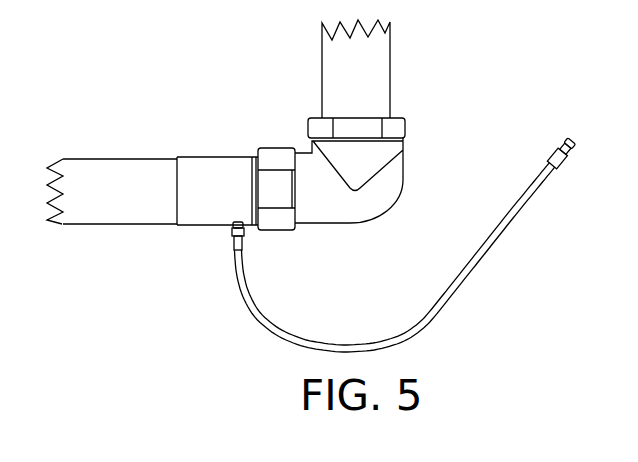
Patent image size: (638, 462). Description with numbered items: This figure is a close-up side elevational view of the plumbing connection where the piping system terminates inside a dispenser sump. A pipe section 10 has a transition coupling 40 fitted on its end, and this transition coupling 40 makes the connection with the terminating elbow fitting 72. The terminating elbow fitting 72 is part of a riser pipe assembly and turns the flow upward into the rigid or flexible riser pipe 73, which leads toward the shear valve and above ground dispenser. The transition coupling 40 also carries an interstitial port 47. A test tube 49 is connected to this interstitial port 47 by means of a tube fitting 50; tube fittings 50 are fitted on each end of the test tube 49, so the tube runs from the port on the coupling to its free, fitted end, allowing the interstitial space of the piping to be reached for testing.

The pipe section 10 is at (132, 190).
The transition coupling 40 is at (218, 187).
The interstitial port 47 is at (255, 230).
The test tube 49 is at (385, 338).
The tube fitting 50 is at (228, 242).
The terminating elbow fitting 72 is at (332, 158).
The riser pipe 73 is at (372, 85).